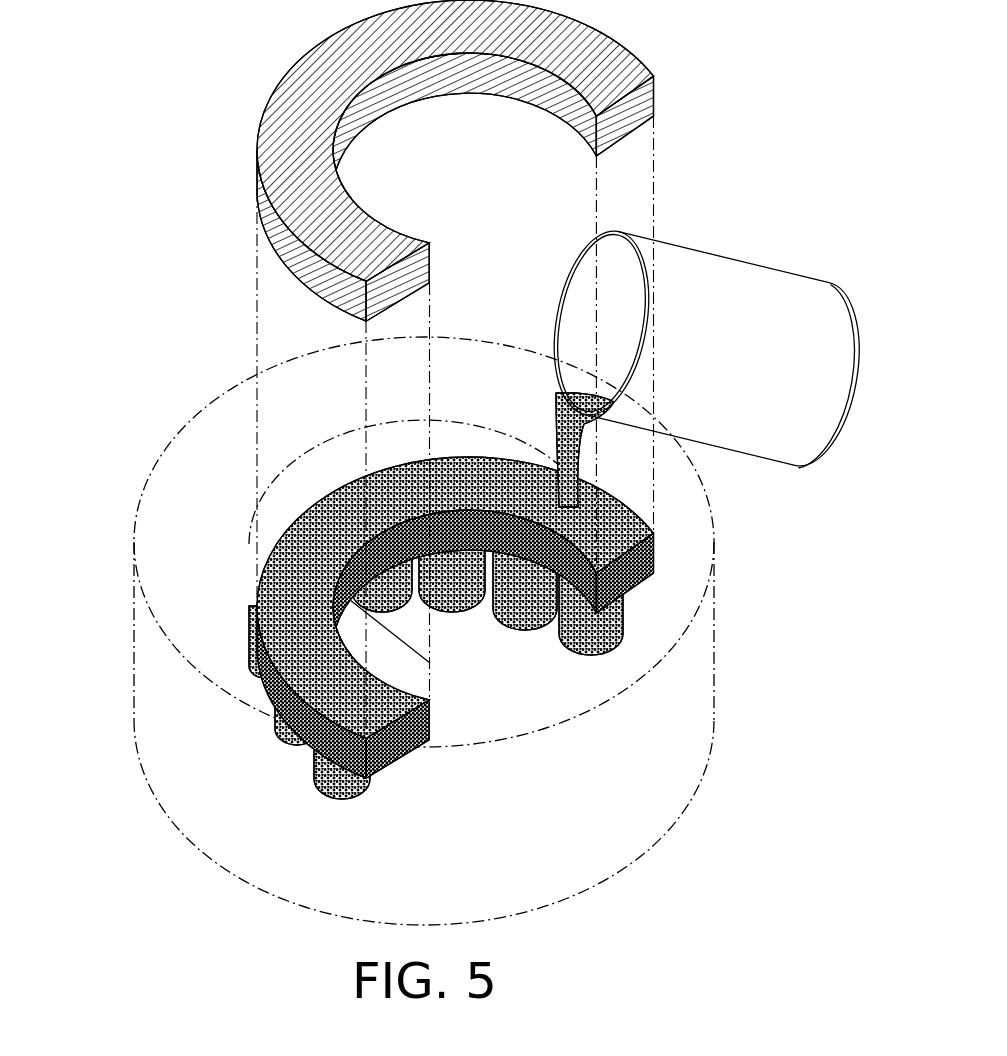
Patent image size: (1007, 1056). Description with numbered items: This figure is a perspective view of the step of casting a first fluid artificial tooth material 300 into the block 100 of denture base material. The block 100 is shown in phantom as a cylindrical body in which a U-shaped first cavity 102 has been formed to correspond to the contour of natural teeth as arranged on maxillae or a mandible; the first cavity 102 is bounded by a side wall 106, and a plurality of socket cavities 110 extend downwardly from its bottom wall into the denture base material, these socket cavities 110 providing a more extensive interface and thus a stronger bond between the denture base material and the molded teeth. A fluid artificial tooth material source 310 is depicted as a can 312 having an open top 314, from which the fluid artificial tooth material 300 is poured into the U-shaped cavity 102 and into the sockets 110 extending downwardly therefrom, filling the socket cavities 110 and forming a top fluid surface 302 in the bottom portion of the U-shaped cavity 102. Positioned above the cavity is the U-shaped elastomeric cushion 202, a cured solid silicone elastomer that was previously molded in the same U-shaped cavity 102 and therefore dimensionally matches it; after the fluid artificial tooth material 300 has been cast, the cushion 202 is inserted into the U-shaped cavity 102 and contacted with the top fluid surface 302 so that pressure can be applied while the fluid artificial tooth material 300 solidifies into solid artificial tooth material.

The block 100 is at (377, 584).
The first cavity 102 is at (451, 415).
The side wall 106 is at (499, 448).
The socket cavities 110 is at (268, 640).
The U-shaped elastomeric cushion 202 is at (308, 57).
The fluid artificial tooth material 300 is at (582, 440).
The top fluid surface 302 is at (313, 500).
The fluid artificial tooth material source 310 is at (697, 300).
The can 312 is at (762, 283).
The open top 314 is at (581, 267).